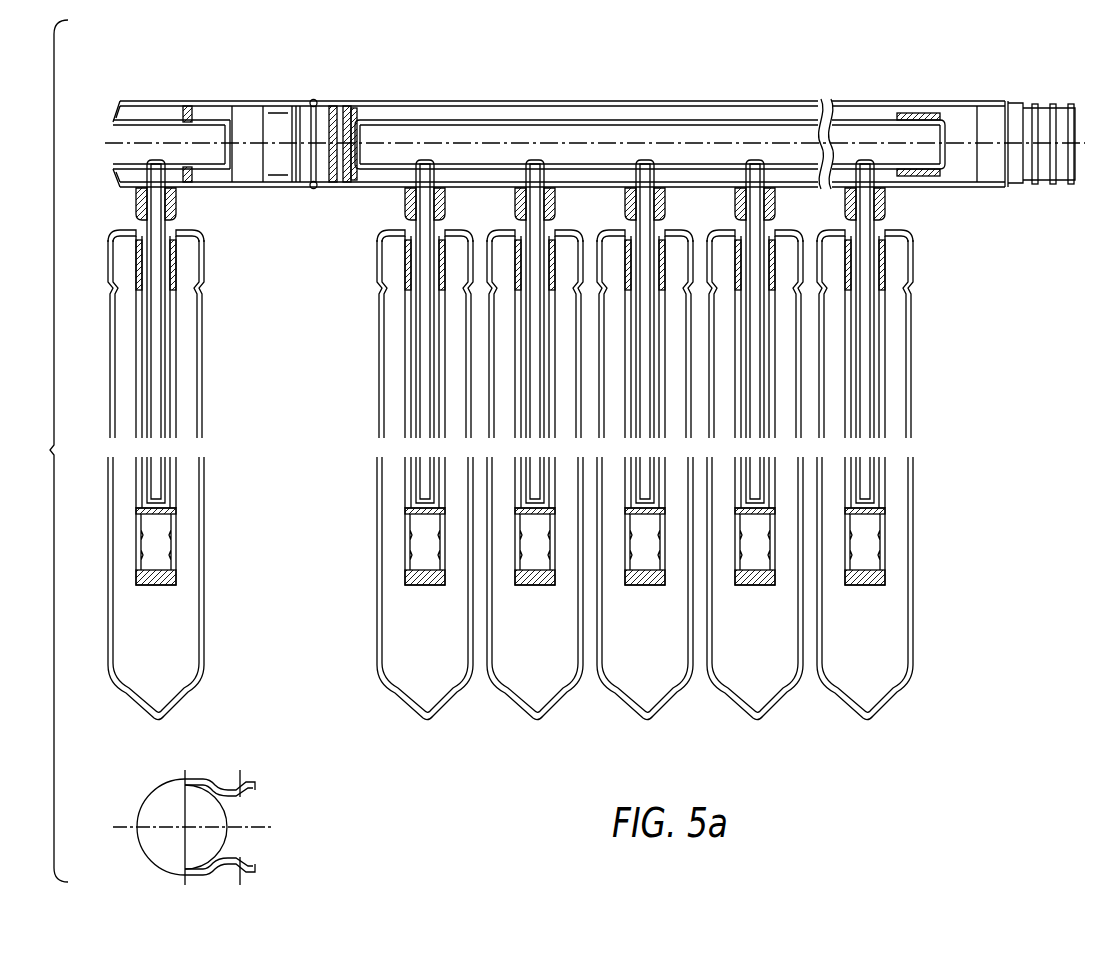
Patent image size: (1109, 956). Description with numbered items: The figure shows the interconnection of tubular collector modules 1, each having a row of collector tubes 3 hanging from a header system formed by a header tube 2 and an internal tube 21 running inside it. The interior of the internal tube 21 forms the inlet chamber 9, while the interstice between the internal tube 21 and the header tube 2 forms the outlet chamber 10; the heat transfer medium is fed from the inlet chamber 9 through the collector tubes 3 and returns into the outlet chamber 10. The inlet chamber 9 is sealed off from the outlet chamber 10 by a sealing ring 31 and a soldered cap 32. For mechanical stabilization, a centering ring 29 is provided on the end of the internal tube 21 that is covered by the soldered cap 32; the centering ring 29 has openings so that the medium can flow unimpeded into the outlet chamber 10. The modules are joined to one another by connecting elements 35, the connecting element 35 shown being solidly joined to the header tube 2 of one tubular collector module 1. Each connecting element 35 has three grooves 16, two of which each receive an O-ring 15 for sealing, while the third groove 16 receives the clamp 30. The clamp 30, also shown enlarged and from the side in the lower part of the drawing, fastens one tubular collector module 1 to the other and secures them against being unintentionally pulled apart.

The tubular collector module 1 is at (593, 454).
The header tube 2 is at (524, 101).
The collector tube 3 is at (103, 686).
The inlet chamber 9 is at (205, 157).
The outlet chamber 10 is at (247, 175).
The O-ring 15 is at (345, 104).
The groove 16 is at (1033, 102).
The internal tube 21 is at (603, 120).
The centering ring 29 is at (897, 114).
The clamp 30 is at (313, 188).
The sealing ring 31 is at (372, 106).
The soldered cap 32 is at (948, 155).
The connecting element 35 is at (291, 88).